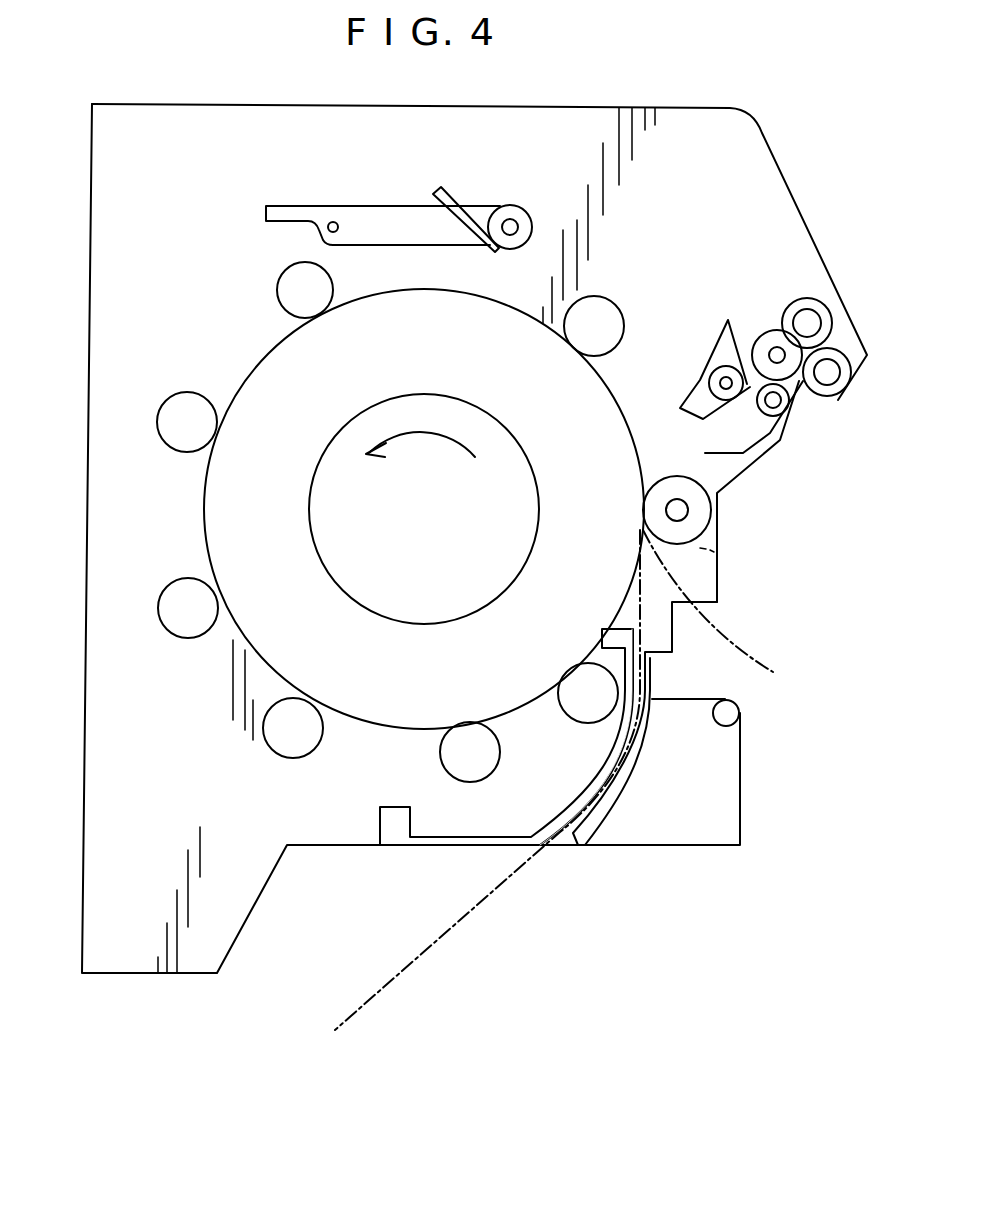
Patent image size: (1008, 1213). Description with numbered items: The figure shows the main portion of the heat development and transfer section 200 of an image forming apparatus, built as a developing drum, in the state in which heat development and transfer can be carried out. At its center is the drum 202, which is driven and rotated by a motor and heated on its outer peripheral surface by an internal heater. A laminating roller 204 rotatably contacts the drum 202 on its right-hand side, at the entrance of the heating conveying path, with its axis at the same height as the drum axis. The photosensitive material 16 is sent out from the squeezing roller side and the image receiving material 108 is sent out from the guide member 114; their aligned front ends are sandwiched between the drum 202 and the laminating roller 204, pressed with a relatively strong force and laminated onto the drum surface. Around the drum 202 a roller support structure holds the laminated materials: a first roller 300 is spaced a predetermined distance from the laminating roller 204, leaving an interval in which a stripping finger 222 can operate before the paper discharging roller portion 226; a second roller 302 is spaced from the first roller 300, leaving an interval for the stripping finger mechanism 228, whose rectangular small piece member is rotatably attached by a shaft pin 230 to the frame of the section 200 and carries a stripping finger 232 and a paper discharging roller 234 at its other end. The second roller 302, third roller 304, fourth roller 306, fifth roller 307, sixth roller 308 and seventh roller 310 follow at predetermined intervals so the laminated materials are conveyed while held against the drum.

The photosensitive material 16 is at (757, 662).
The image receiving material 108 is at (482, 905).
The guide member 114 is at (618, 792).
The heat development and transfer section 200 is at (793, 130).
The drum 202 is at (455, 687).
The laminating roller 204 is at (698, 522).
The stripping finger 222 is at (697, 405).
The paper discharging roller portion 226 is at (806, 403).
The stripping finger mechanism 228 is at (389, 206).
The shaft pin 230 is at (333, 220).
The stripping finger 232 is at (447, 192).
The paper discharging roller 234 is at (510, 205).
The first roller 300 is at (612, 322).
The second roller 302 is at (290, 281).
The third roller 304 is at (175, 443).
The fourth roller 306 is at (180, 630).
The fifth roller 307 is at (283, 745).
The sixth roller 308 is at (445, 755).
The seventh roller 310 is at (585, 718).